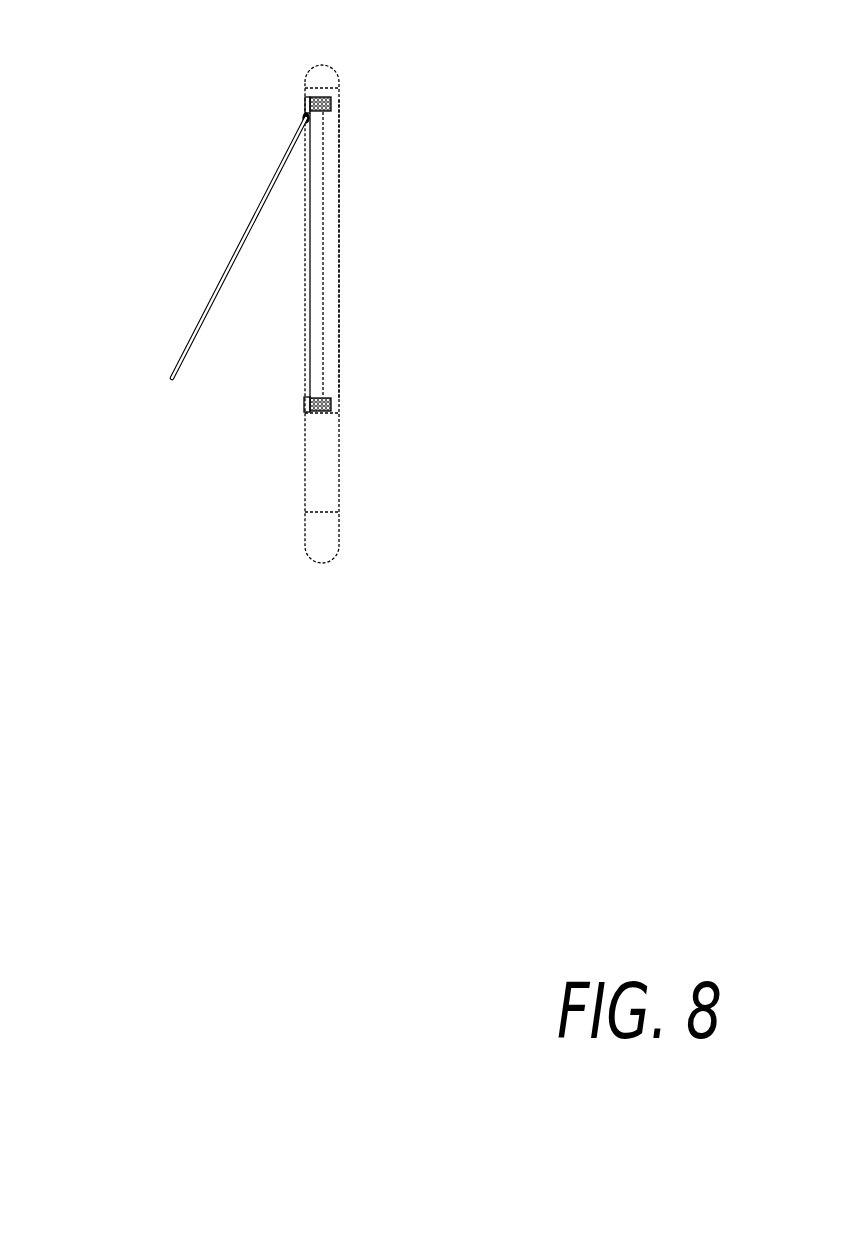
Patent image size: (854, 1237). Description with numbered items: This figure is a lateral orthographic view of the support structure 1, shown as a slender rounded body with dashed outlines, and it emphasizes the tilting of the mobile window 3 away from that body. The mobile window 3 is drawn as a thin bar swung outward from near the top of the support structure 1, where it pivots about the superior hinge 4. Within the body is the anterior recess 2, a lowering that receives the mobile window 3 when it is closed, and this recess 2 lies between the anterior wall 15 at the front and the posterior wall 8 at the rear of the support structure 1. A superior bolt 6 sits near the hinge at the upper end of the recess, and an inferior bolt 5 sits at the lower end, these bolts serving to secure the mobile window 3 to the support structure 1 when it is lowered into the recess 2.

The support structure 1 is at (338, 72).
The anterior recess 2 is at (310, 353).
The mobile window 3 is at (217, 290).
The superior hinge 4 is at (308, 117).
The inferior bolt 5 is at (331, 411).
The superior bolt 6 is at (305, 103).
The posterior wall 8 is at (340, 253).
The anterior wall 15 is at (304, 413).